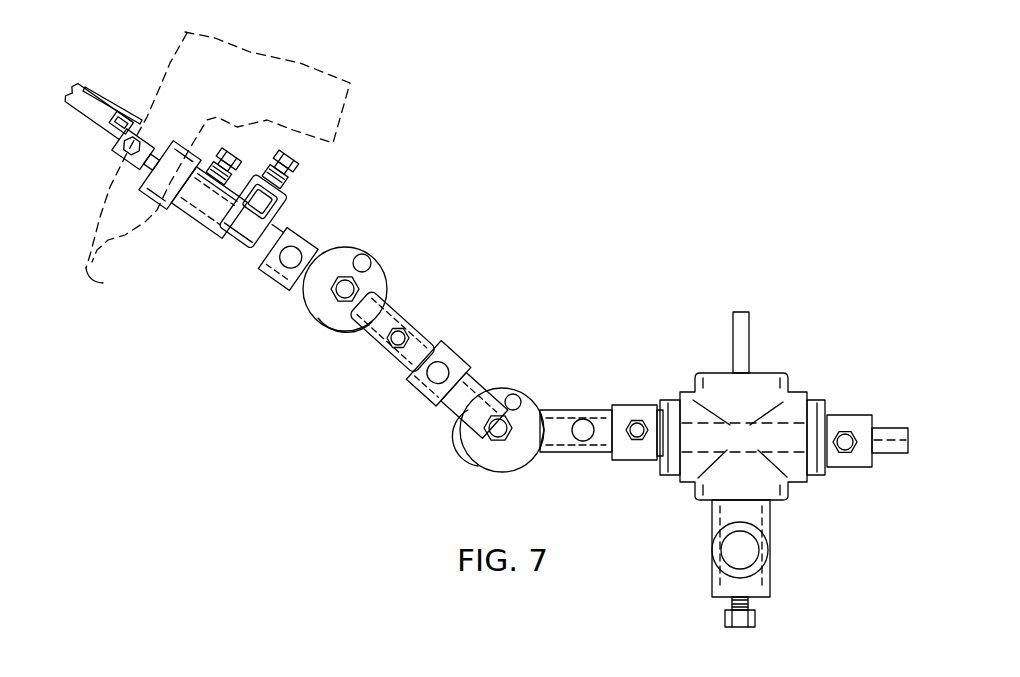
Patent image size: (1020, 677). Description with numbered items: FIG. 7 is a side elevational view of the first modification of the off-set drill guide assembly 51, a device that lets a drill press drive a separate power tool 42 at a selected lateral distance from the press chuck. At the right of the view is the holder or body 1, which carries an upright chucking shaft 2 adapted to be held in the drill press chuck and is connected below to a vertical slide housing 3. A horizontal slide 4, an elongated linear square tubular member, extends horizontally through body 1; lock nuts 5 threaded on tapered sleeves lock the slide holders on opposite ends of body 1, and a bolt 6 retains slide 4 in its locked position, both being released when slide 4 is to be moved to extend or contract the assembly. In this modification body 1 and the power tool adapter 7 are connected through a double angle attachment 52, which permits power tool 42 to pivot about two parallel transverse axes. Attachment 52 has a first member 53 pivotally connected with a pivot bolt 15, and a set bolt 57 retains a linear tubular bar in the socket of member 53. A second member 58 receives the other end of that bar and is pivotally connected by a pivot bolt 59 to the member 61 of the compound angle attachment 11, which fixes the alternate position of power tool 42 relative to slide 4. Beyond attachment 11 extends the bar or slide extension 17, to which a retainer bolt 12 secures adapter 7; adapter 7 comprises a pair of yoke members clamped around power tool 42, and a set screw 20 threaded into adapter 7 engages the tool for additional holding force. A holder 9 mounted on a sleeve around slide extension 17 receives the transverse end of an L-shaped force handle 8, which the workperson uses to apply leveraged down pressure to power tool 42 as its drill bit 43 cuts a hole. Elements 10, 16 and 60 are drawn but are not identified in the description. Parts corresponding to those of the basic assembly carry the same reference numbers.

The body 1 is at (753, 400).
The upright chucking shaft 2 is at (747, 330).
The vertical slide housing 3 is at (758, 583).
The horizontal slide 4 is at (887, 440).
The lock nuts 5 is at (668, 405).
The bolt 6 is at (397, 340).
The power tool adapter 7 is at (160, 200).
The L-shaped force handle 8 is at (87, 110).
The holder 9 is at (253, 222).
The lock nut 10 is at (741, 618).
The compound angle attachment 11 is at (562, 412).
The retainer bolt 12 is at (288, 270).
The pivot bolt 15 is at (500, 440).
The hole 16 is at (515, 399).
The slide extension 17 is at (224, 232).
The set screw 20 is at (105, 110).
The power tool 42 is at (176, 66).
The drill bit 43 is at (94, 268).
The off-set drill guide assembly 51 is at (481, 265).
The double angle attachment 52 is at (411, 403).
The first member 53 is at (480, 412).
The set bolt 57 is at (445, 365).
The second member 58 is at (372, 300).
The pivot bolt 59 is at (344, 292).
The hole 60 is at (362, 263).
The member 61 is at (297, 232).